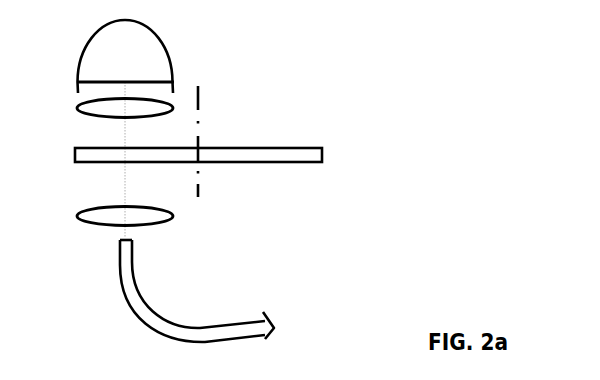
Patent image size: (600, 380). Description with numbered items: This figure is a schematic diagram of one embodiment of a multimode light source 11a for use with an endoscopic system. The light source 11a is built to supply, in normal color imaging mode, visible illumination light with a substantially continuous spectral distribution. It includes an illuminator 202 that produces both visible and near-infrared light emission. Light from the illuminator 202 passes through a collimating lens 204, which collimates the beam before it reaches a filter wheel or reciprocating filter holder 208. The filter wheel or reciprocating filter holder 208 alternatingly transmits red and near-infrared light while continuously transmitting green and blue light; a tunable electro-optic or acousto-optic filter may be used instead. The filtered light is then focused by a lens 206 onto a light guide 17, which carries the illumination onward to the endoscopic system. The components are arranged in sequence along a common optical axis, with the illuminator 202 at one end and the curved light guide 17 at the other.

The illuminator 202 is at (173, 57).
The collimating lens 204 is at (173, 110).
The filter wheel or reciprocating filter holder 208 is at (275, 148).
The lens 206 is at (175, 216).
The light guide 17 is at (155, 308).
The light source 11a is at (346, 241).